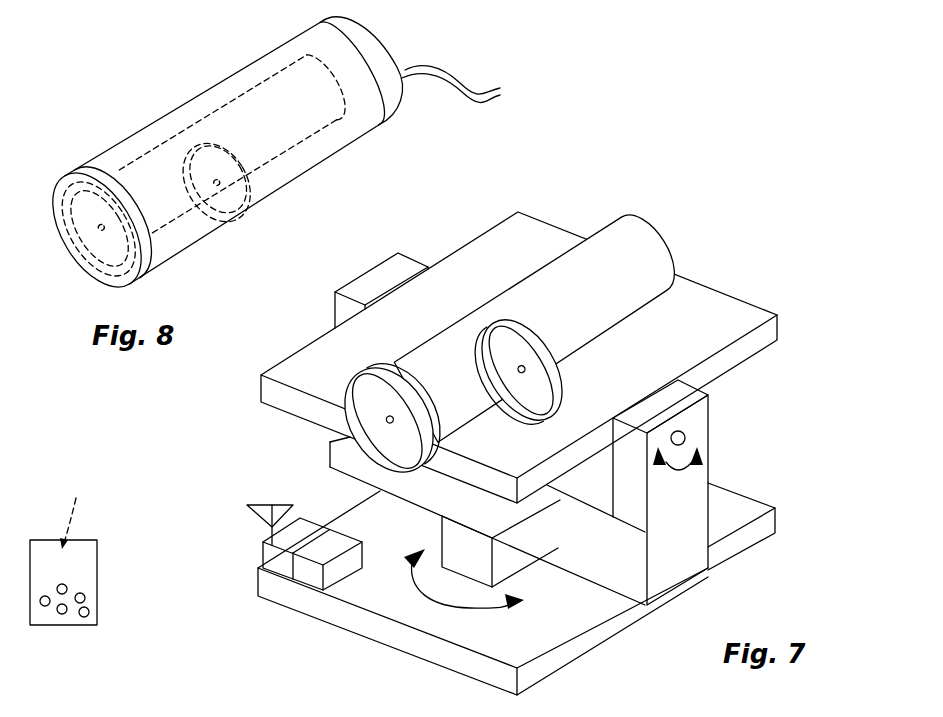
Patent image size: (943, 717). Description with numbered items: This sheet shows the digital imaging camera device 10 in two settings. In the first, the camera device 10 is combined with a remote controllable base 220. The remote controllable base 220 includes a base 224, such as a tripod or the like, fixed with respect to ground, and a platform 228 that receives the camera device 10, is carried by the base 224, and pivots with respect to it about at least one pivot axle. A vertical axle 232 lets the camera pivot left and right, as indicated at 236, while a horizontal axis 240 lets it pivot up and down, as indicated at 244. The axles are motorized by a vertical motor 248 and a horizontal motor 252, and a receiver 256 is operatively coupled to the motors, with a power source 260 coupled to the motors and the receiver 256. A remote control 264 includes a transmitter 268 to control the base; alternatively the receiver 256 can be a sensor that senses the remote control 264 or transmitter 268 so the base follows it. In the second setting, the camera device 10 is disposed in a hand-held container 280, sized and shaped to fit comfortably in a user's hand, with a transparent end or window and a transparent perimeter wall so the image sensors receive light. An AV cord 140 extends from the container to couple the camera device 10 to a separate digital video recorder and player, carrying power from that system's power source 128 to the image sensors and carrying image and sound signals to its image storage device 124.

In FIG. 7, the camera device 10 is at (548, 265).
In FIG. 8, the camera device 10 is at (220, 103).
In FIG. 8, the AV cord 140 is at (453, 78).
In FIG. 8, the hand-held container 280 is at (326, 159).
In FIG. 7, the remote controllable base 220 is at (480, 424).
In FIG. 7, the base 224 is at (572, 649).
In FIG. 7, the platform 228 is at (740, 298).
In FIG. 7, the vertical axle 232 is at (478, 563).
In FIG. 7, the left and right pivoting 236 is at (425, 593).
In FIG. 7, the horizontal axis 240 is at (690, 428).
In FIG. 7, the up and down pivoting 244 is at (680, 483).
In FIG. 7, the vertical motor 248 is at (453, 550).
In FIG. 7, the horizontal motor 252 is at (678, 497).
In FIG. 7, the receiver 256 is at (258, 500).
In FIG. 7, the power source 260 is at (312, 580).
In FIG. 7, the remote control 264 is at (97, 596).
In FIG. 7, the transmitter 268 is at (79, 511).
In FIG. 7, the image storage device 124 is at (665, 8).
In FIG. 7, the power source 128 is at (757, 13).